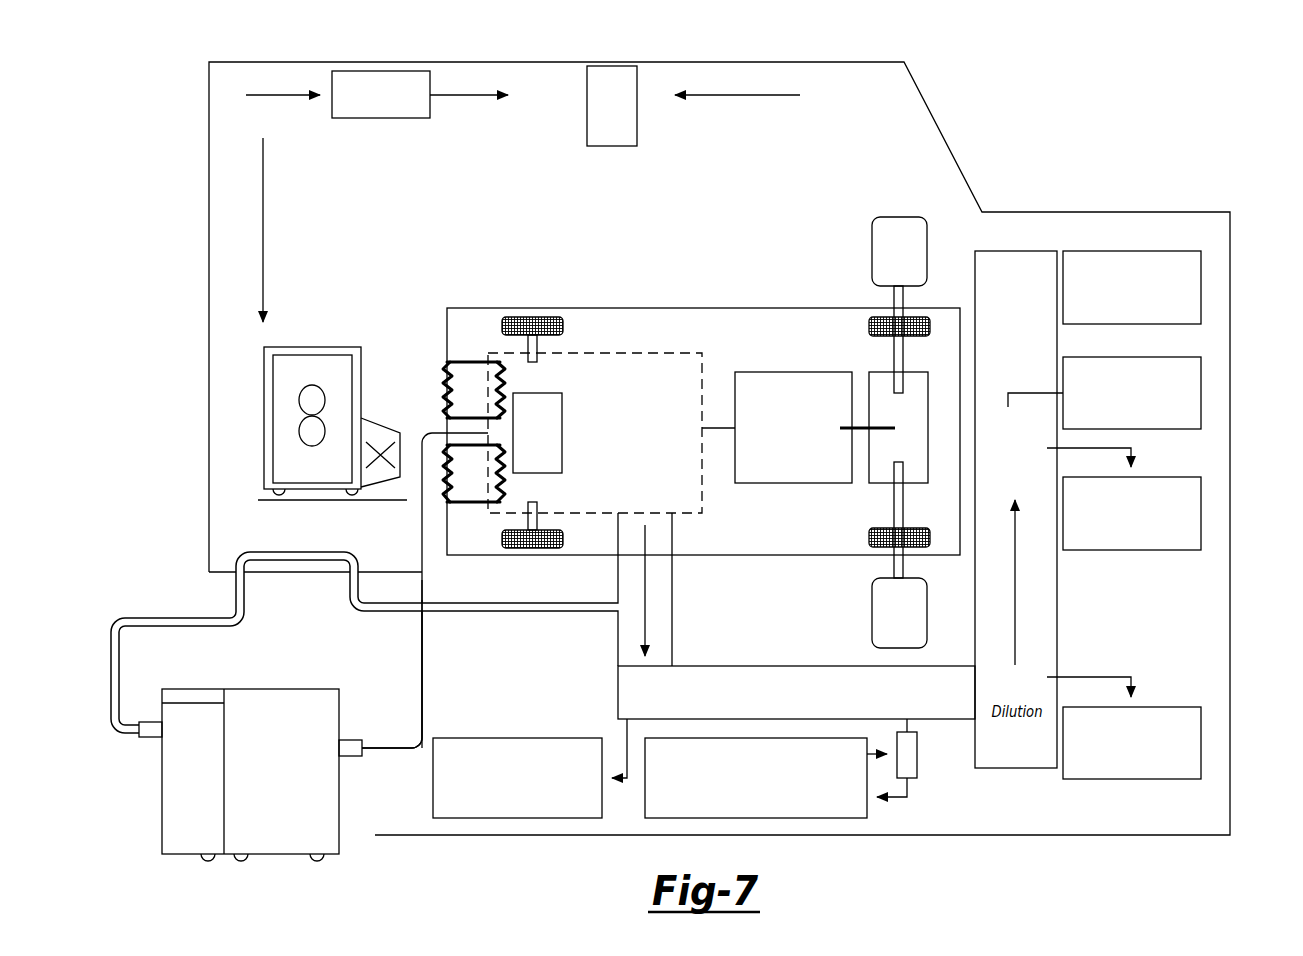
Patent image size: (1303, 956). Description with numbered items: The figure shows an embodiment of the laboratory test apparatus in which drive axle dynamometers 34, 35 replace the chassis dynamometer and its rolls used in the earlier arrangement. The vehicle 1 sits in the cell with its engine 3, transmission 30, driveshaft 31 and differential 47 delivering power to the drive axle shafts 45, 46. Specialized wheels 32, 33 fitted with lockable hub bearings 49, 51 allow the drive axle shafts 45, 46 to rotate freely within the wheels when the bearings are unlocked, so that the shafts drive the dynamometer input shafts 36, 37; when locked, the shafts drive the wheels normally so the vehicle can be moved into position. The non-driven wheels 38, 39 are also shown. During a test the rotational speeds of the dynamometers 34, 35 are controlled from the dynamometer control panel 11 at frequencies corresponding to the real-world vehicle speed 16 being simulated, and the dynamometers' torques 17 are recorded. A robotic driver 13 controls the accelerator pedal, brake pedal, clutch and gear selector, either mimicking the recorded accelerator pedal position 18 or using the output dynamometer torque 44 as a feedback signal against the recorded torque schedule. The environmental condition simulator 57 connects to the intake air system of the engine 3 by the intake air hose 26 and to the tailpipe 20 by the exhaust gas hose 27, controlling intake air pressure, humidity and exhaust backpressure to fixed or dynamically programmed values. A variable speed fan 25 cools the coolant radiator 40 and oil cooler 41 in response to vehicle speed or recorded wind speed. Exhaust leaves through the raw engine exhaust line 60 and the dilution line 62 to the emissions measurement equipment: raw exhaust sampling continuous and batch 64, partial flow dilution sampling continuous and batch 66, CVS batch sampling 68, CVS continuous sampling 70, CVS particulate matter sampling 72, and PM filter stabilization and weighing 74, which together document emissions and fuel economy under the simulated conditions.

The vehicle 1 is at (687, 308).
The engine 3 is at (627, 353).
The dynamometer control panel 11 is at (377, 71).
The robotic driver 13 is at (612, 66).
The vehicle speed control signal 16 is at (250, 92).
The torque output signal 17 is at (493, 93).
The accelerator pedal position 18 is at (788, 93).
The tailpipe 20 is at (634, 597).
The variable speed fan 25 is at (300, 442).
The intake air hose 26 is at (422, 663).
The exhaust gas hose 27 is at (513, 613).
The transmission 30 is at (778, 372).
The driveshaft 31 is at (848, 428).
The specialized wheel 32 is at (869, 540).
The specialized wheel 33 is at (869, 330).
The drive axle dynamometer 34 is at (872, 615).
The drive axle dynamometer 35 is at (872, 255).
The dynamometer input shaft 36 is at (905, 578).
The dynamometer input shaft 37 is at (905, 298).
The wheel 38 is at (502, 540).
The wheel 39 is at (502, 326).
The coolant radiator 40 is at (447, 362).
The oil cooler 41 is at (447, 503).
The output dynamometer torque 44 is at (727, 428).
The drive axle shaft 45 is at (893, 355).
The drive axle shaft 46 is at (893, 510).
The differential 47 is at (918, 378).
The lockable hub bearing 49 is at (905, 528).
The lockable hub bearing 51 is at (890, 316).
The environmental condition simulator 57 is at (162, 798).
The raw engine exhaust line 60 is at (638, 697).
The dilution line 62 is at (997, 753).
The raw exhaust sampling continuous and batch 64 is at (513, 818).
The partial flow dilution sampling continuous and batch 66 is at (829, 818).
The CVS batch sampling 68 is at (1178, 707).
The CVS continuous sampling 70 is at (1133, 550).
The CVS particulate matter sampling 72 is at (1201, 393).
The PM filter stabilization and weighing 74 is at (1201, 288).